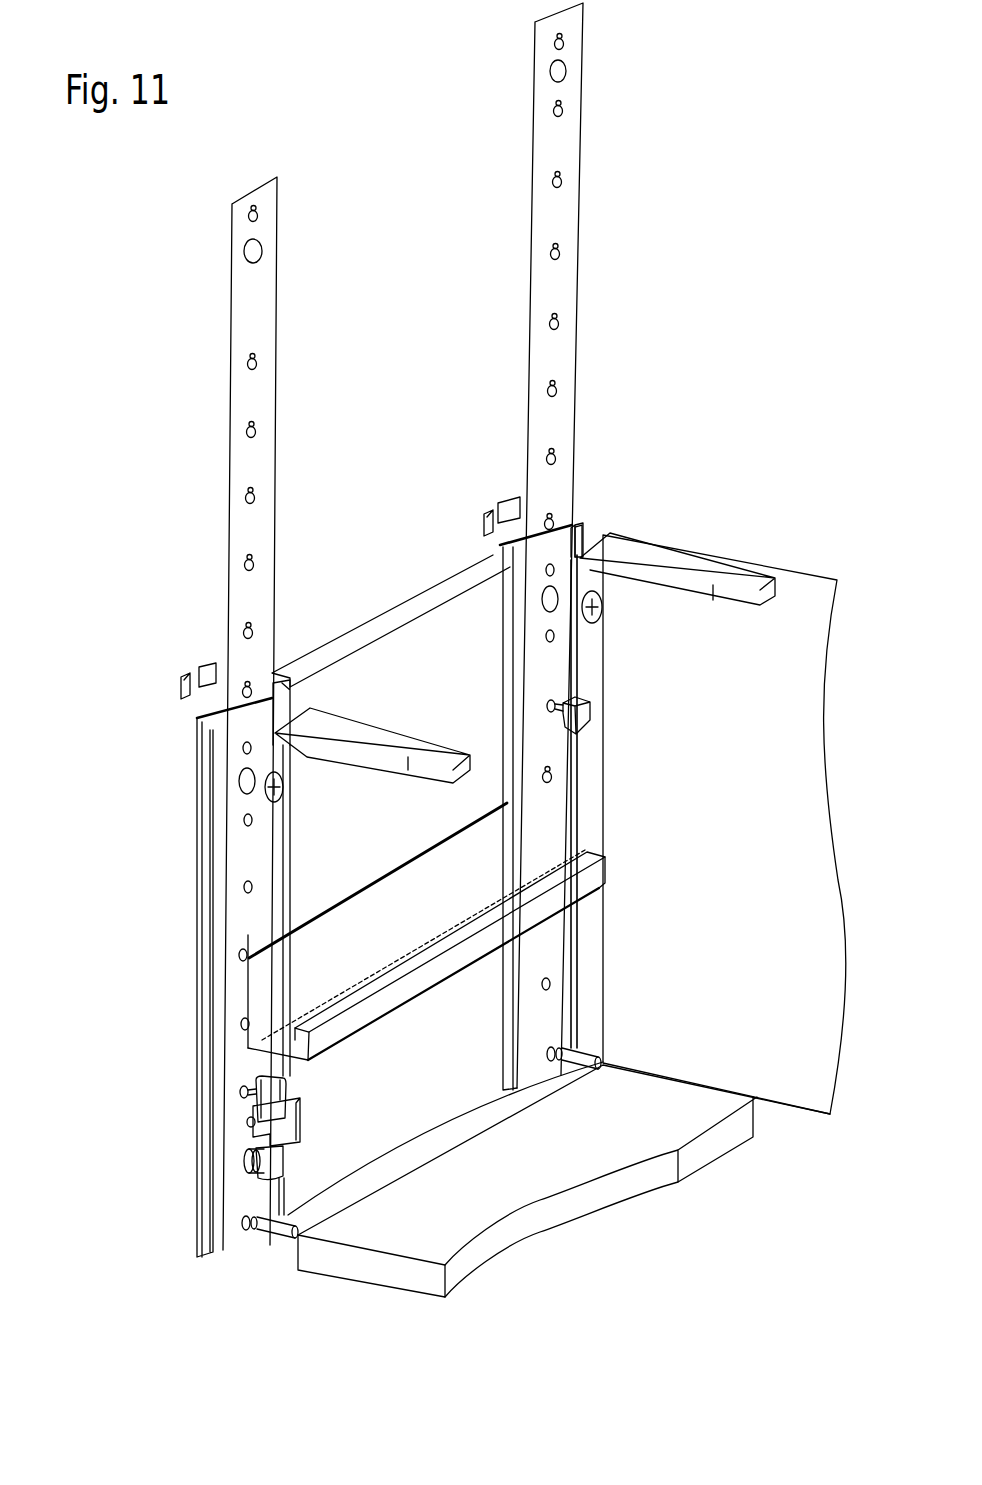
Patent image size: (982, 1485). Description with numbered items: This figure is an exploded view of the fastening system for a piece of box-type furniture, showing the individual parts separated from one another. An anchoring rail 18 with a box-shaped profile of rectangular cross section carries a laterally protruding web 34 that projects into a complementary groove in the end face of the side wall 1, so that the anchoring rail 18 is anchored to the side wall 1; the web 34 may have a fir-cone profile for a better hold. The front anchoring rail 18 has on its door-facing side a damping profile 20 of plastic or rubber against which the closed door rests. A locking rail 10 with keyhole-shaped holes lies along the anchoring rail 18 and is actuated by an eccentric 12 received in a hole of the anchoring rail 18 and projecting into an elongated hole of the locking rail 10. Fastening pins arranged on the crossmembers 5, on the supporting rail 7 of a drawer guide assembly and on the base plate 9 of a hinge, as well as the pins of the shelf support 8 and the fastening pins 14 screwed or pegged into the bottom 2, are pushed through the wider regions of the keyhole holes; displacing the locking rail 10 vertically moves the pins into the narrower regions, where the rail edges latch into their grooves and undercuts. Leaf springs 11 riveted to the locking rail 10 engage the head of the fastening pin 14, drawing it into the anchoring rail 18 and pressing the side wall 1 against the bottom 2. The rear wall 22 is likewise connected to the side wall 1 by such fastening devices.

The side wall 1 is at (377, 660).
The bottom 2 is at (535, 1240).
The crossmember 5 is at (328, 730).
The supporting rail 7 is at (445, 970).
The shelf support 8 is at (590, 718).
The base plate 9 is at (256, 1160).
The locking rail 10 is at (245, 319).
The leaf spring 11 is at (206, 668).
The eccentric 12 is at (264, 786).
The fastening pin 14 is at (272, 1240).
The anchoring rail 18 is at (245, 920).
The damping profile 20 is at (200, 880).
The rear wall 22 is at (793, 590).
The web 34 is at (583, 540).